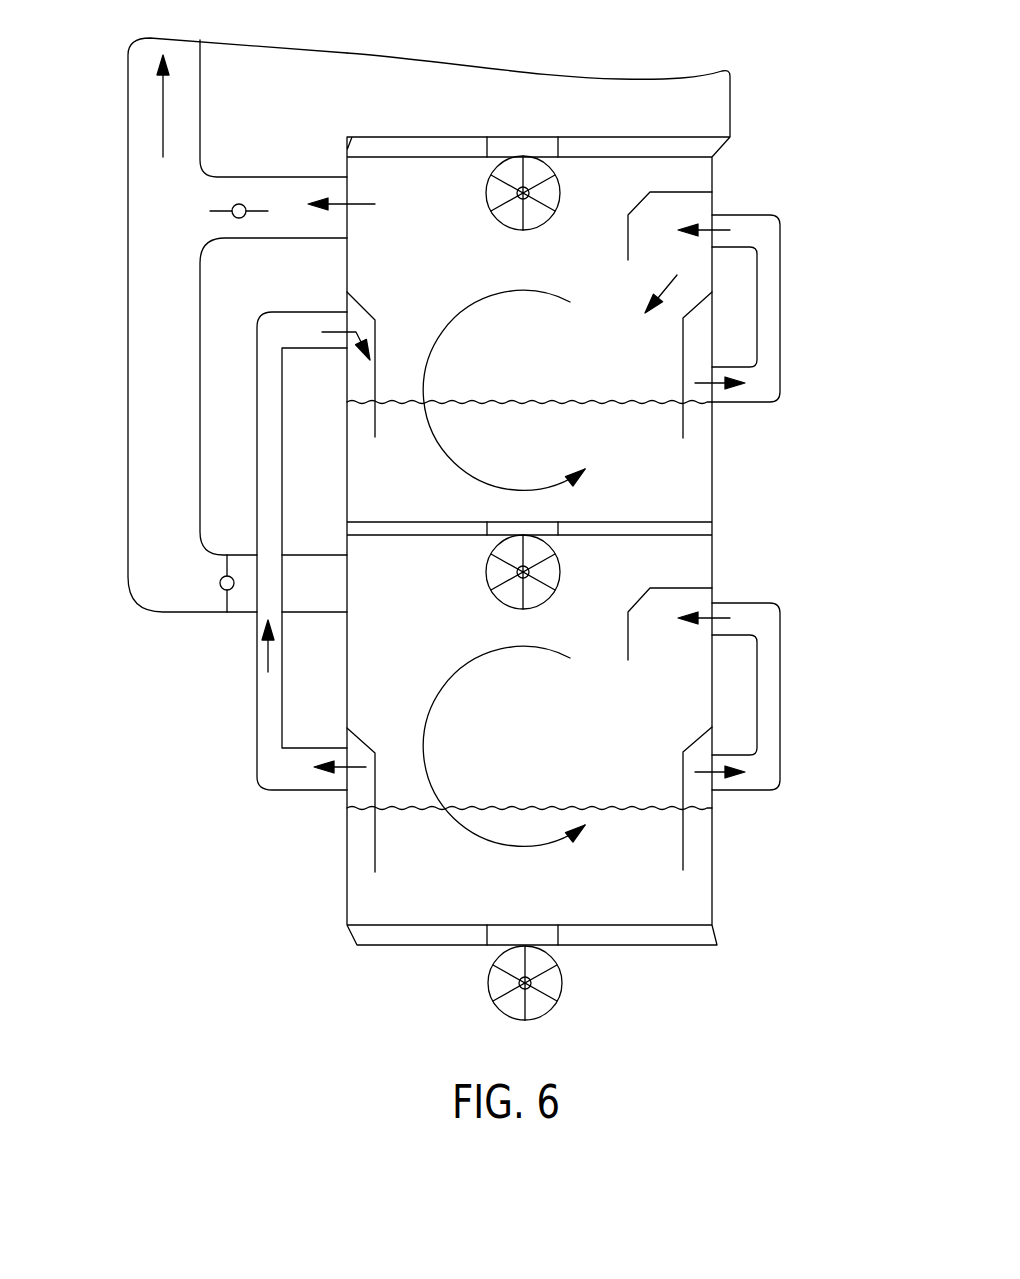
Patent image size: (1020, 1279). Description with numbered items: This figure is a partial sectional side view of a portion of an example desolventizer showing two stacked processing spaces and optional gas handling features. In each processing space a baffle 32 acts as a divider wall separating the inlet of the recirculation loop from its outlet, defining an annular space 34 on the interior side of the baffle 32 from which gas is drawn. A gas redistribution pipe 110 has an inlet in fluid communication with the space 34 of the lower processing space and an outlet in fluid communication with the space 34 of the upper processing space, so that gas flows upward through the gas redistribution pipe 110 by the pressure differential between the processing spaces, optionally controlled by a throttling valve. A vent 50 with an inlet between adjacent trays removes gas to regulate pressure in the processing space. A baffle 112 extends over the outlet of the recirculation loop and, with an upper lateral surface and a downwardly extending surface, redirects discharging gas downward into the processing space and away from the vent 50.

The vent 50 is at (128, 438).
The gas redistribution pipe 110 is at (255, 730).
The baffle 112 is at (751, 189).
The baffle 32 is at (377, 331).
The space 34 is at (363, 368).